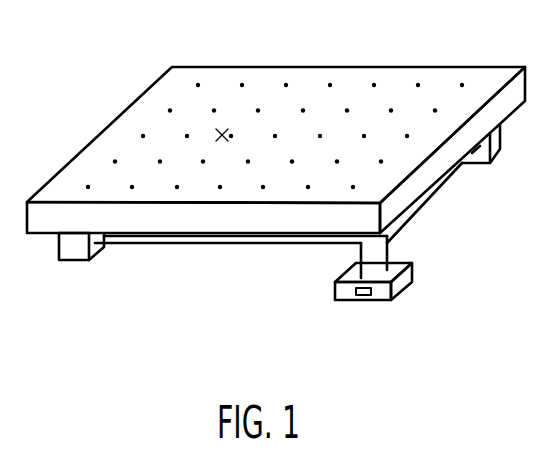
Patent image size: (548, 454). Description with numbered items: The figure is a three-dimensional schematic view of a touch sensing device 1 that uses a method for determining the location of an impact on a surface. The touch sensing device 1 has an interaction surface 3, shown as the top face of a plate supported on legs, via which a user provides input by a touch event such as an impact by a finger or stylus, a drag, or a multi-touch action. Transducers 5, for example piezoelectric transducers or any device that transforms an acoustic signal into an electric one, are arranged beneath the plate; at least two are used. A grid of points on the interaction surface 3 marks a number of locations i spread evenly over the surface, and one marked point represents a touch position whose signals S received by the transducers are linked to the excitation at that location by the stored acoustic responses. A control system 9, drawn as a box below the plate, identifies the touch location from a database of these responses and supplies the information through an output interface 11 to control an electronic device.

The touch sensing device 1 is at (136, 68).
The interaction surface 3 is at (145, 115).
The locations i is at (330, 85).
The signals S is at (225, 129).
The transducer 5 is at (71, 256).
The control system 9 is at (335, 293).
The output interface 11 is at (359, 296).